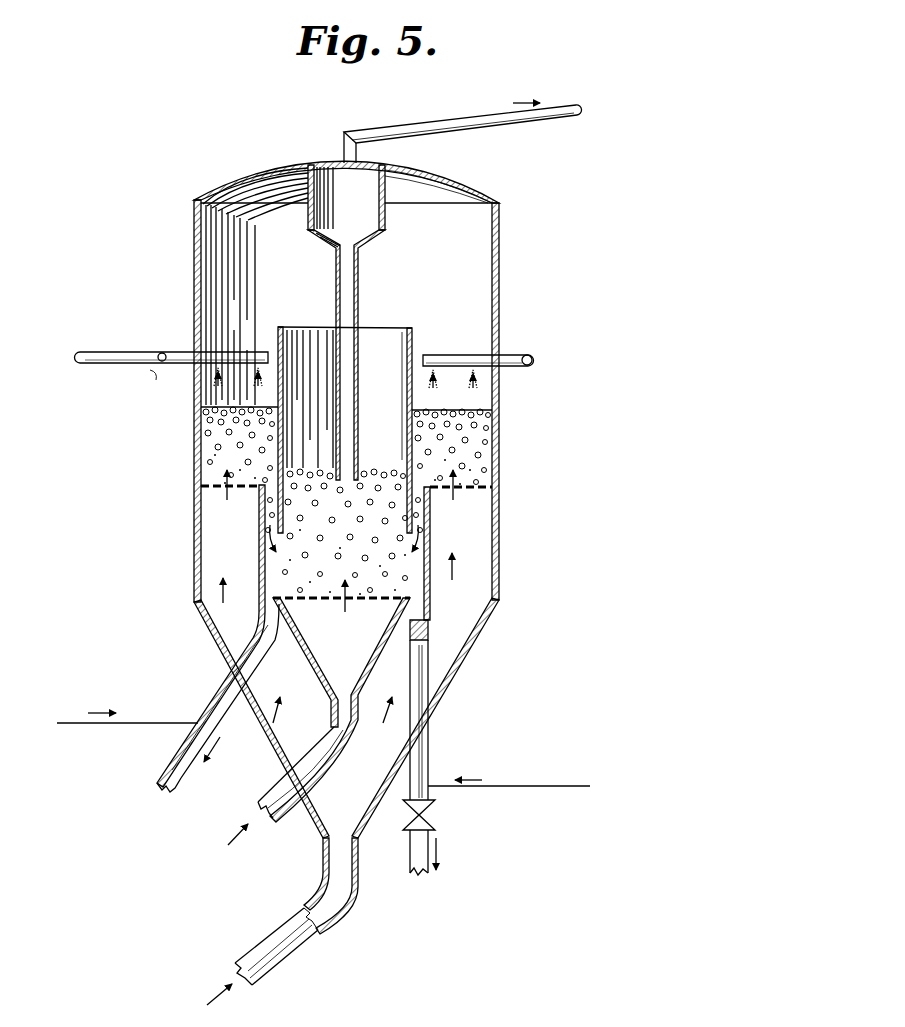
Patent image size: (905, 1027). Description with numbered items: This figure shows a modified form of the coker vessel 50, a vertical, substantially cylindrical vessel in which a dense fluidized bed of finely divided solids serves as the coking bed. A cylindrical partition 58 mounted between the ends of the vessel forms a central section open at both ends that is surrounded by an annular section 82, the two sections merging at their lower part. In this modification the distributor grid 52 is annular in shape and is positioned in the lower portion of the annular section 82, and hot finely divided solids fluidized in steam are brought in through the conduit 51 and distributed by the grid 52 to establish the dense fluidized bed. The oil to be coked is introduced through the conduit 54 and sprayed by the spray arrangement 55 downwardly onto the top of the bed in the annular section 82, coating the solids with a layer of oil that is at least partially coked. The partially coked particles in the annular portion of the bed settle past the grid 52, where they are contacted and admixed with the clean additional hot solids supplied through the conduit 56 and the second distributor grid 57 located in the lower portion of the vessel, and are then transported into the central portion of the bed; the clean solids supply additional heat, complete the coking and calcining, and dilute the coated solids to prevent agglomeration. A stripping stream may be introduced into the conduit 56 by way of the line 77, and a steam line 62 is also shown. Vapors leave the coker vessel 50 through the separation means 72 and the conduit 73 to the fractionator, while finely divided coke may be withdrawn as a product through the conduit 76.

The coker vessel 50 is at (499, 270).
The conduit 51 is at (268, 933).
The distributor grid 52 is at (217, 488).
The conduit 54 is at (110, 352).
The spray arrangement 55 is at (467, 355).
The conduit 56 is at (270, 818).
The distributor grid 57 is at (307, 603).
The cylindrical partition 58 is at (392, 320).
The steam line 62 is at (167, 722).
The separation means 72 is at (383, 236).
The conduit 73 is at (462, 120).
The conduit 76 is at (428, 736).
The line 77 is at (571, 788).
The annular section 82 is at (232, 262).